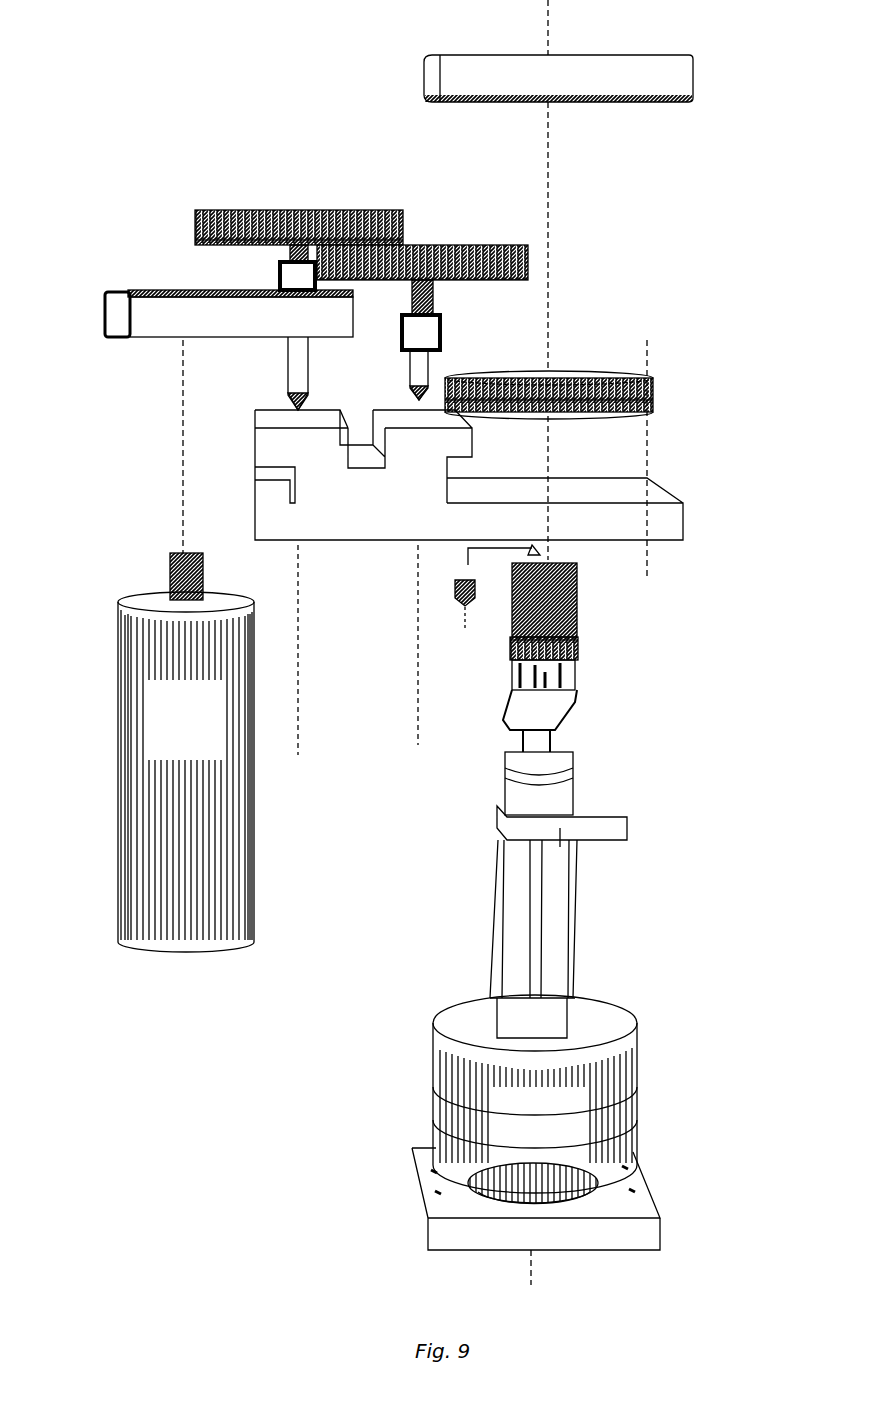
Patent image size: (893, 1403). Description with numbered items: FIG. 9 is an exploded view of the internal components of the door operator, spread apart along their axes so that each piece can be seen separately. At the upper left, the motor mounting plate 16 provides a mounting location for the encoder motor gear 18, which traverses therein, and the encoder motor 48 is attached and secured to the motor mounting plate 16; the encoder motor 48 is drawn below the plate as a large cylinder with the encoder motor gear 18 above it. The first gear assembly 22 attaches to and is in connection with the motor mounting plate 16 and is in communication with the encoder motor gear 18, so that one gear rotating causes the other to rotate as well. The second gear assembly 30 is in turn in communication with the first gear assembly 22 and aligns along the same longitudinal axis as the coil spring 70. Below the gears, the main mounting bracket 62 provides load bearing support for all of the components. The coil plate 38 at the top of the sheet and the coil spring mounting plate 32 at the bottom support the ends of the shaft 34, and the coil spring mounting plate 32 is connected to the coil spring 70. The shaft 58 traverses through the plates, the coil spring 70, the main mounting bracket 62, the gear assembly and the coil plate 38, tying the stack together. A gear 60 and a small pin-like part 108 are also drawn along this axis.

The motor mounting plate 16 is at (103, 318).
The encoder motor gear 18 is at (170, 570).
The first gear assembly 22 is at (202, 210).
The second gear assembly 30 is at (478, 245).
The coil spring mounting plate 32 is at (662, 1240).
The shaft 34 is at (578, 612).
The coil plate 38 is at (695, 75).
The encoder motor 48 is at (190, 730).
The shaft 58 is at (578, 920).
The drive gear 60 is at (630, 420).
The main mounting bracket 62 is at (385, 518).
The coil spring 70 is at (550, 1147).
The pin 108 is at (460, 621).